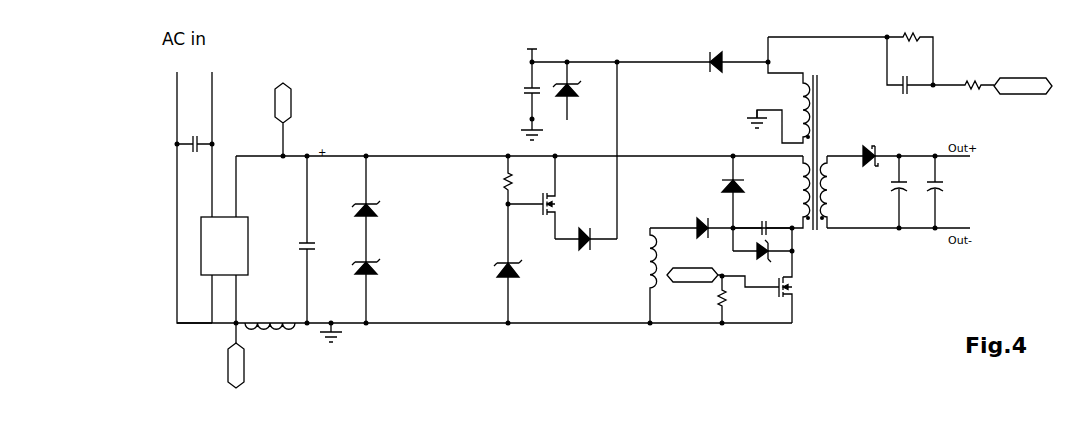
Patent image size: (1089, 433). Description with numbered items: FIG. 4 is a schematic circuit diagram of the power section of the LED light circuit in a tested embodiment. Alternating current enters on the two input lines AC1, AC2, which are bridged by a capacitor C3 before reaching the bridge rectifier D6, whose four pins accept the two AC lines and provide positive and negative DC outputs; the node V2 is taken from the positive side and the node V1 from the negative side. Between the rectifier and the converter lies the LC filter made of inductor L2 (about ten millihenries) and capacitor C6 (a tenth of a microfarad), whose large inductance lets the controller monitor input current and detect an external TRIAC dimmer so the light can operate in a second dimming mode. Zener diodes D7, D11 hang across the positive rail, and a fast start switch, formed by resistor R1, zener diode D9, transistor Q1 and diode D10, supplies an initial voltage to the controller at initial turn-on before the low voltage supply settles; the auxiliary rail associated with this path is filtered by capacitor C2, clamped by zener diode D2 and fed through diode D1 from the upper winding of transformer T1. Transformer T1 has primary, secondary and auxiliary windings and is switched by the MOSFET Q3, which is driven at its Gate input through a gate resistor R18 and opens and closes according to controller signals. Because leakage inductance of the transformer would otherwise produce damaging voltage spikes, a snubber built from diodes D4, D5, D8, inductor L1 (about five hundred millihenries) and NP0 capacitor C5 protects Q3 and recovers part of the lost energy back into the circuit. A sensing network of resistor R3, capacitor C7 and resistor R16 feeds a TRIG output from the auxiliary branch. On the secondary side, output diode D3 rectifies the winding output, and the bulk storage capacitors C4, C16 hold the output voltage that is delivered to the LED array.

The AC input line 1 AC1 is at (185, 197).
The AC input line 2 AC2 is at (202, 197).
The capacitor C3 is at (194, 152).
The bridge rectifier D6 is at (230, 245).
The voltage node V1 is at (235, 365).
The voltage node V2 is at (282, 119).
The inductor L2 is at (270, 317).
The capacitor C6 is at (302, 239).
The zener diode D7 is at (365, 209).
The zener diode D11 is at (365, 291).
The fast start switch component R1 is at (516, 180).
The fast start switch component D9 is at (505, 263).
The fast start switch component Q1 is at (542, 197).
The fast start switch component D10 is at (586, 246).
The capacitor C2 is at (640, 90).
The zener diode D2 is at (567, 91).
The diode D1 is at (706, 59).
The transformer T1 is at (738, 133).
The snubber component D4 is at (725, 203).
The snubber component D5 is at (704, 220).
The snubber inductor L1 is at (661, 275).
The snubber capacitor C5 is at (762, 224).
The snubber component D8 is at (762, 253).
The MOSFET Q3 is at (767, 275).
The gate signal input Gate is at (694, 275).
The resistor R18 is at (733, 299).
The resistor R3 is at (850, 53).
The capacitor C7 is at (910, 65).
The resistor R16 is at (963, 79).
The trigger output TRIG is at (1023, 86).
The output diode D3 is at (869, 148).
The bulk storage capacitor C4 is at (895, 192).
The bulk storage capacitor C16 is at (942, 192).